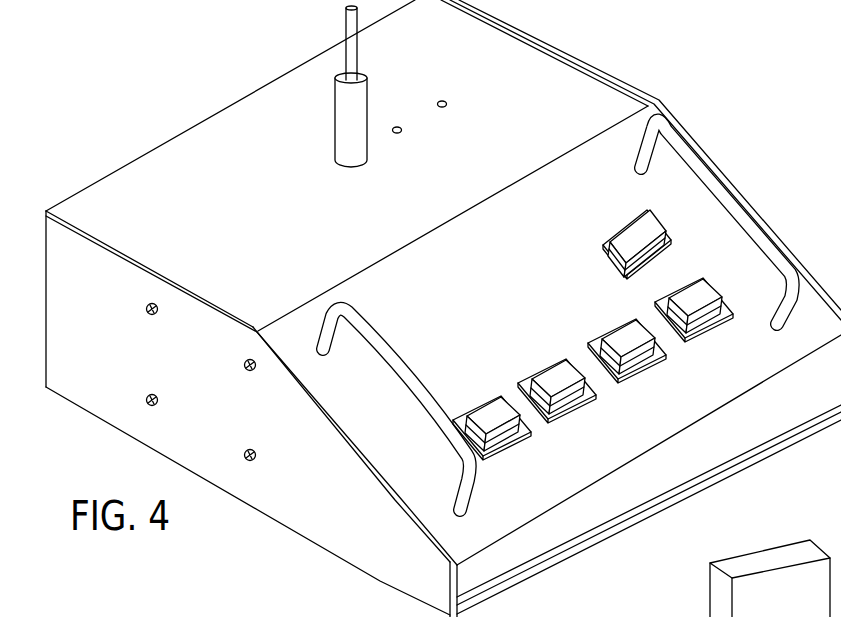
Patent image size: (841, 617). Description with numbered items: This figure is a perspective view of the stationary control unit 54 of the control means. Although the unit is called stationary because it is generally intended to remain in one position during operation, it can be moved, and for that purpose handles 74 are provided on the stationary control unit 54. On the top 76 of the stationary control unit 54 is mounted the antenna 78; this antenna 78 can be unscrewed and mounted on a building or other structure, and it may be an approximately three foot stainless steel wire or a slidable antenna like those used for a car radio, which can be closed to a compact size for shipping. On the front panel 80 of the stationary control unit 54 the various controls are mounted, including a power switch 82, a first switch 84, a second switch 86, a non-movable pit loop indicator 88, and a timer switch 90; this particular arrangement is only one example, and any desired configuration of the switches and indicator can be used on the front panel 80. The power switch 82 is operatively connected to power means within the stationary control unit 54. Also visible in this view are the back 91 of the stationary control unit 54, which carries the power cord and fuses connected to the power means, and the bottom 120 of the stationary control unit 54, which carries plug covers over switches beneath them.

The stationary control unit 54 is at (427, 308).
The handles 74 is at (410, 388).
The top 76 is at (524, 146).
The antenna 78 is at (352, 116).
The front panel 80 is at (498, 269).
The power switch 82 is at (496, 416).
The first switch 84 is at (556, 377).
The second switch 86 is at (624, 339).
The non-movable pit loop indicator 88 is at (700, 298).
The timer switch 90 is at (630, 233).
The back 91 is at (43, 350).
The bottom 120 is at (286, 526).